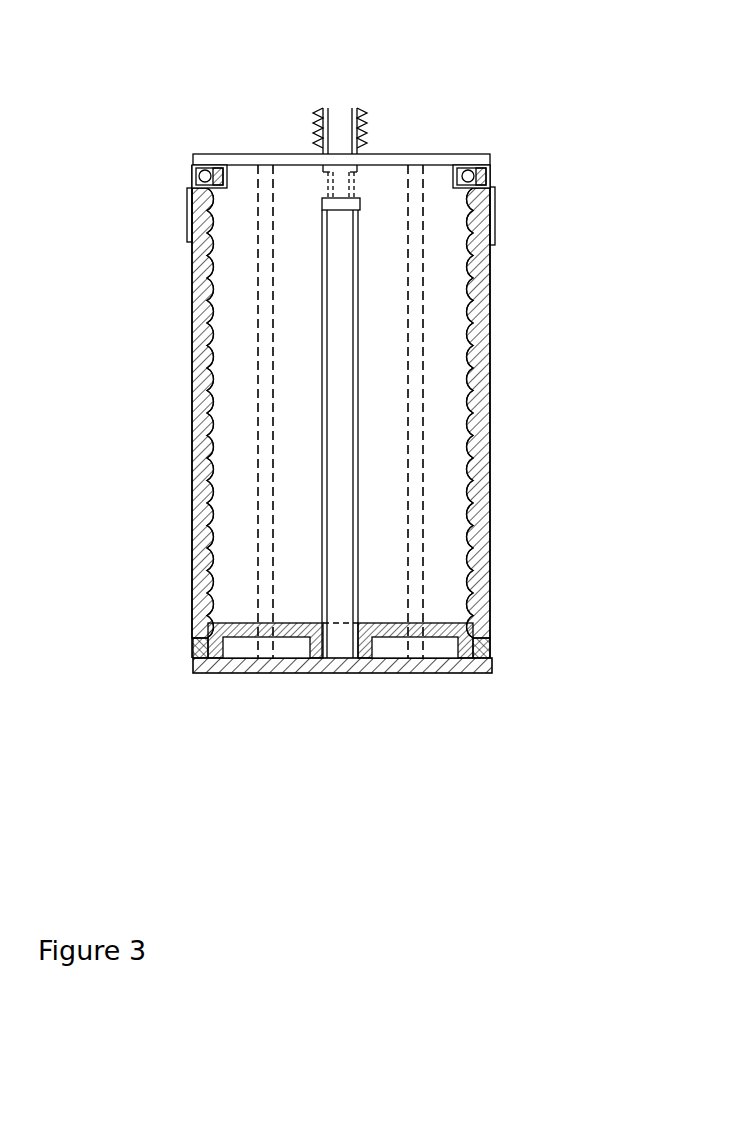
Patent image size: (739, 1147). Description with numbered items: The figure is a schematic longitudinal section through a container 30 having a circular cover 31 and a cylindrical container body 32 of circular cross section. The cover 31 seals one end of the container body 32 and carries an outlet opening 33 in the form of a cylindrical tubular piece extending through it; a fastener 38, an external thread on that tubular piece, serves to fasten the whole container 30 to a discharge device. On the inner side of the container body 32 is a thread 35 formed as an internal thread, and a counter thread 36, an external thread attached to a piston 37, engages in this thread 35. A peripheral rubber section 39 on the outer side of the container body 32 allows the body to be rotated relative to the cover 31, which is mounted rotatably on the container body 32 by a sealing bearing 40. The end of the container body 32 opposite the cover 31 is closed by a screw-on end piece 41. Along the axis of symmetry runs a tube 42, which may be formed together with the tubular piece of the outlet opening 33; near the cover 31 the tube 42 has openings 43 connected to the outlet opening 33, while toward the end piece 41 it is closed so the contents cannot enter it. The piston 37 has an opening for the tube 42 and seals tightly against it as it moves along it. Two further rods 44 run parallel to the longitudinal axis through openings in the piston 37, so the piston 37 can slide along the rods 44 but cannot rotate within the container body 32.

The container 30 is at (128, 107).
The cover 31 is at (249, 153).
The container body 32 is at (193, 386).
The outlet opening 33 is at (340, 117).
The thread 35 is at (209, 317).
The counter thread 36 is at (205, 636).
The piston 37 is at (243, 627).
The fastener 38 is at (362, 142).
The peripheral rubber section 39 is at (186, 215).
The sealing bearing 40 is at (212, 172).
The end piece 41 is at (278, 667).
The tube 42 is at (345, 318).
The openings 43 is at (333, 186).
The rods 44 is at (268, 427).